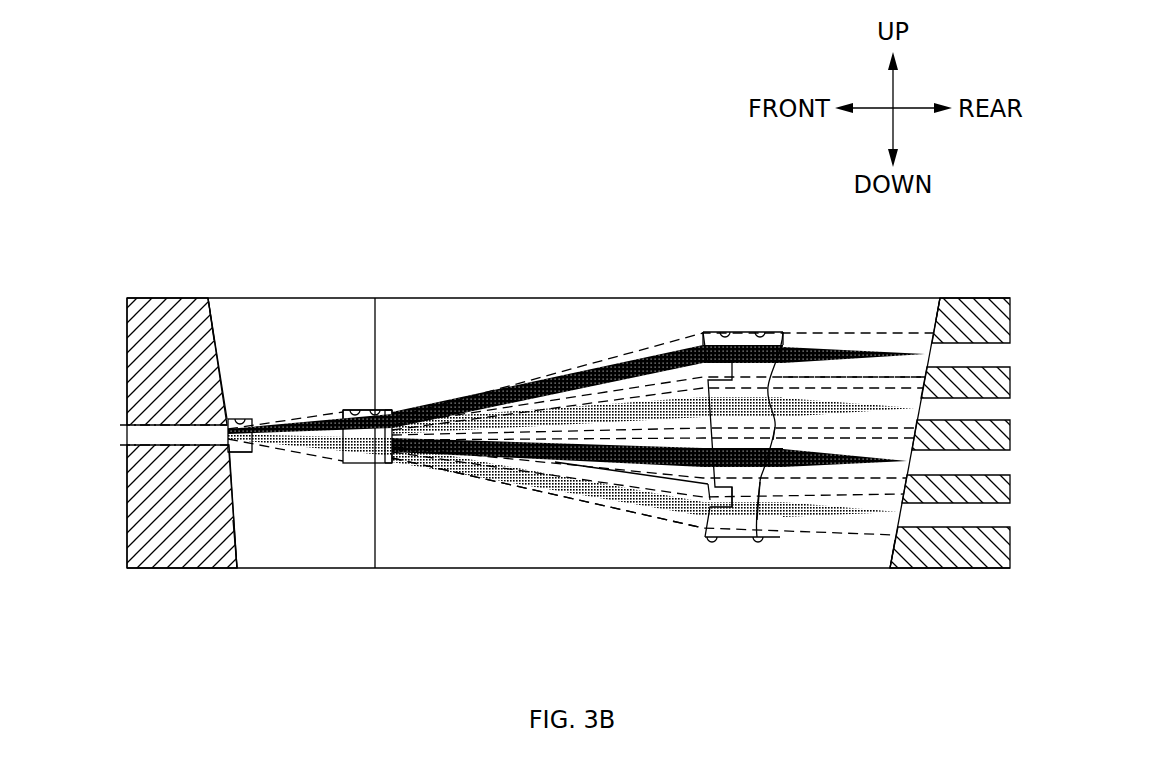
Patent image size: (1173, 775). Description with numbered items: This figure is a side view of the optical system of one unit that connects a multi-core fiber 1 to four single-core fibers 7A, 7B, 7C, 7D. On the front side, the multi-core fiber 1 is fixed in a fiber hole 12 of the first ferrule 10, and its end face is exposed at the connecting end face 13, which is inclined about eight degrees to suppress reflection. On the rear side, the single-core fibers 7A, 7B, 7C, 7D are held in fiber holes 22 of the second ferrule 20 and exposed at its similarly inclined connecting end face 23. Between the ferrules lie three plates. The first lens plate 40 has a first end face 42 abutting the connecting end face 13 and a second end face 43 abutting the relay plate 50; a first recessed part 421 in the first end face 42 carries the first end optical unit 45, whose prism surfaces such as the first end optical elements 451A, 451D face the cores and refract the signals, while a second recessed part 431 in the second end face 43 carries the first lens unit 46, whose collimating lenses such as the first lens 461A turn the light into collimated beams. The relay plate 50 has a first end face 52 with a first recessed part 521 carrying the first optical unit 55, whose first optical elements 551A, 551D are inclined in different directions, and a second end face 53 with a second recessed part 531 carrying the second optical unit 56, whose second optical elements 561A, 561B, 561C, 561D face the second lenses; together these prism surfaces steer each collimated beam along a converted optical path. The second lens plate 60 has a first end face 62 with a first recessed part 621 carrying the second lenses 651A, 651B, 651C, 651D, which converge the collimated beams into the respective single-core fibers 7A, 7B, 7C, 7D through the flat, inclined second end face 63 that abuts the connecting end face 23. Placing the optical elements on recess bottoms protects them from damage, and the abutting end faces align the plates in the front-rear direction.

The multi-core fiber 1 is at (178, 470).
The first ferrule 10 is at (187, 555).
The fiber hole 12 is at (173, 432).
The connecting end face 13 is at (244, 560).
The second ferrule 20 is at (933, 540).
The fiber hole 22 is at (941, 300).
The connecting end face 23 is at (900, 548).
The first lens plate 40 is at (315, 552).
The first end face 42 is at (250, 552).
The first recessed part 421 is at (222, 412).
The second end face 43 is at (344, 465).
The second recessed part 431 is at (376, 298).
The first end optical unit 45 is at (258, 400).
The first end optical element 451A is at (246, 417).
The first end optical element 451D is at (246, 455).
The first lens unit 46 is at (351, 396).
The first lens 461A is at (346, 408).
The relay plate 50 is at (547, 553).
The first end face 52 is at (392, 552).
The first recessed part 521 is at (385, 408).
The second end face 53 is at (733, 540).
The second recessed part 531 is at (733, 332).
The first optical unit 55 is at (394, 395).
The first optical element 551A is at (395, 408).
The first optical element 551D is at (390, 465).
The second optical unit 56 is at (692, 318).
The second optical element 561A is at (712, 332).
The second optical element 561B is at (700, 338).
The second optical element 561C is at (708, 485).
The second optical element 561D is at (708, 540).
The second lens plate 60 is at (845, 552).
The first end face 62 is at (730, 545).
The first recessed part 621 is at (770, 332).
The second end face 63 is at (892, 568).
The second lens 651A is at (787, 335).
The second lens 651B is at (790, 350).
The second lens 651C is at (770, 530).
The second lens 651D is at (768, 540).
The single-core fiber 7A is at (948, 340).
The single-core fiber 7B is at (975, 390).
The single-core fiber 7C is at (1000, 540).
The single-core fiber 7D is at (973, 540).